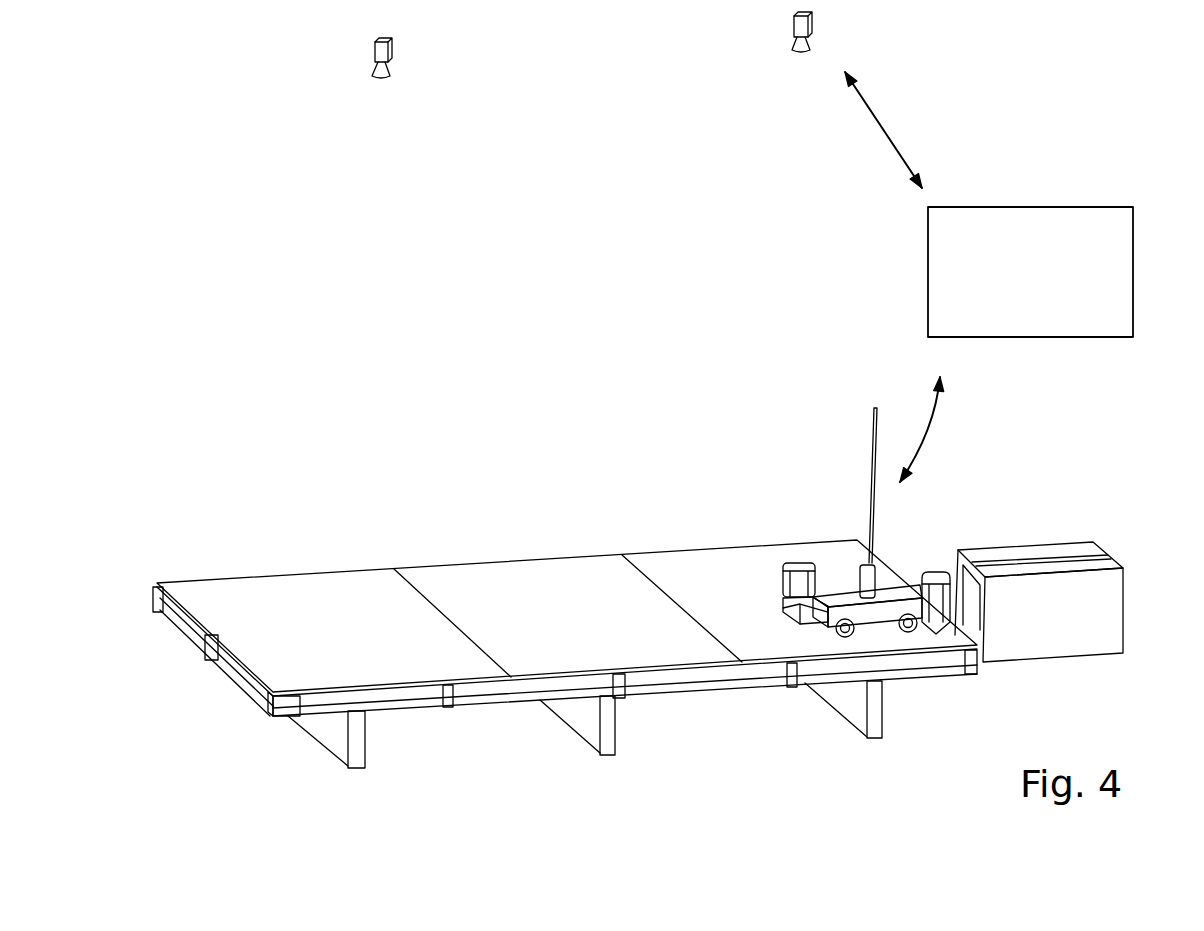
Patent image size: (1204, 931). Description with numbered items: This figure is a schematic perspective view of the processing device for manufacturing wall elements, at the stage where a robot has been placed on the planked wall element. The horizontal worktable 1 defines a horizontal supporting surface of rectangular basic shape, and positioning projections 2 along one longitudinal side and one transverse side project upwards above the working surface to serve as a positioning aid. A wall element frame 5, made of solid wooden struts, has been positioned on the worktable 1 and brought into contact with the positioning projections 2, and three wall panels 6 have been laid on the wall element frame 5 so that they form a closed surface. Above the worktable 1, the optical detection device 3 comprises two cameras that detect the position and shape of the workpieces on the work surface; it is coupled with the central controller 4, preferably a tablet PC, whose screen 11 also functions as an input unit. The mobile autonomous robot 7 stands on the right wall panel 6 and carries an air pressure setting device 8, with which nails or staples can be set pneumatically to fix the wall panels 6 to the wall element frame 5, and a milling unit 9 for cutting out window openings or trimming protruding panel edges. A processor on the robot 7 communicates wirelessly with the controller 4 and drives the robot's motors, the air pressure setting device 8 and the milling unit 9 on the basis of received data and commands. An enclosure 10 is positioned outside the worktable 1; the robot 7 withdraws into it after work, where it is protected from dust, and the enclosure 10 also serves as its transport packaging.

The horizontal worktable 1 is at (565, 675).
The positioning projections 2 is at (622, 680).
The optical detection device 3 is at (409, 63).
The central controller 4 is at (1030, 272).
The wall element frame 5 is at (692, 675).
The wall panels 6 is at (307, 624).
The mobile autonomous robot 7 is at (840, 585).
The air pressure setting device 8 is at (790, 571).
The milling unit 9 is at (940, 580).
The enclosure 10 is at (1095, 608).
The screen 11 is at (1030, 272).